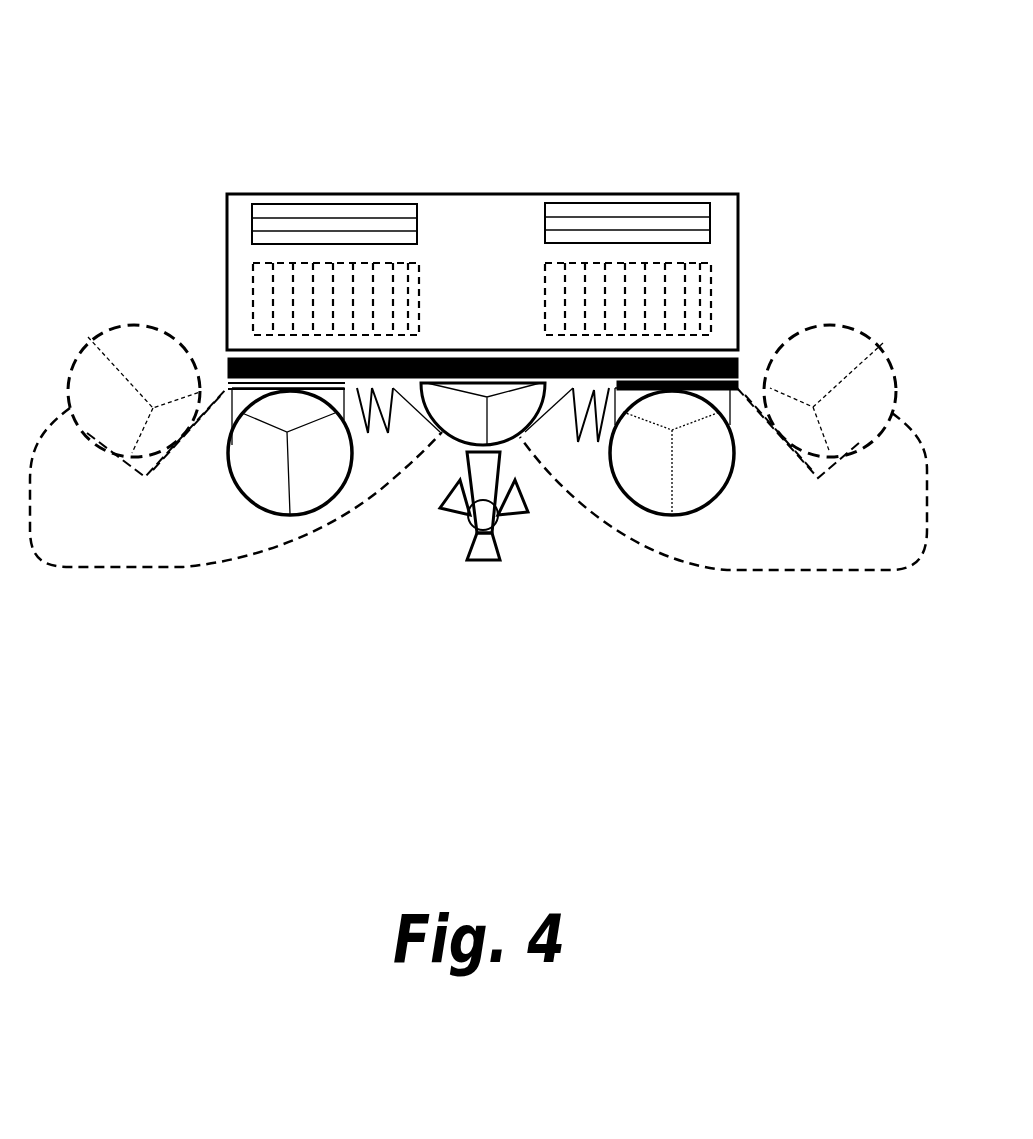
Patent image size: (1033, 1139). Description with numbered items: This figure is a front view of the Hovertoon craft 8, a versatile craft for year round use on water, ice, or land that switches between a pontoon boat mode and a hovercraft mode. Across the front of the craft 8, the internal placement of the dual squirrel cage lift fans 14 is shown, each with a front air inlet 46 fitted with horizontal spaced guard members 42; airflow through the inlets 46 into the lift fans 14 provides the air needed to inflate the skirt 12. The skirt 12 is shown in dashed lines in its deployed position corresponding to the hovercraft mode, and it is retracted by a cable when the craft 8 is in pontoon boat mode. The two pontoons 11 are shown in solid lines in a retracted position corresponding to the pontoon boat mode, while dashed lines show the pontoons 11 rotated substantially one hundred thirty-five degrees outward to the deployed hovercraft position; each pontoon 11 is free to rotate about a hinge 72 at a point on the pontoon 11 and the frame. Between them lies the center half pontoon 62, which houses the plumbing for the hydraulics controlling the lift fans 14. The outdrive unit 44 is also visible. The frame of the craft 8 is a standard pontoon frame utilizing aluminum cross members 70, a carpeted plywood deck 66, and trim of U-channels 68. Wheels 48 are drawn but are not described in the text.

The hovercraft 8 is at (748, 222).
The pontoons 11 is at (88, 433).
The skirt 12 is at (183, 567).
The lift fans 14 is at (545, 287).
The horizontal spaced guard members 42 is at (275, 232).
The outdrive unit 44 is at (478, 563).
The front air inlets 46 is at (403, 215).
The wheel 48 is at (287, 515).
The center half pontoon 62 is at (442, 432).
The carpeted plywood deck 66 is at (712, 357).
The U-channels 68 is at (738, 378).
The aluminum cross members 70 is at (557, 390).
The hinge 72 is at (740, 397).